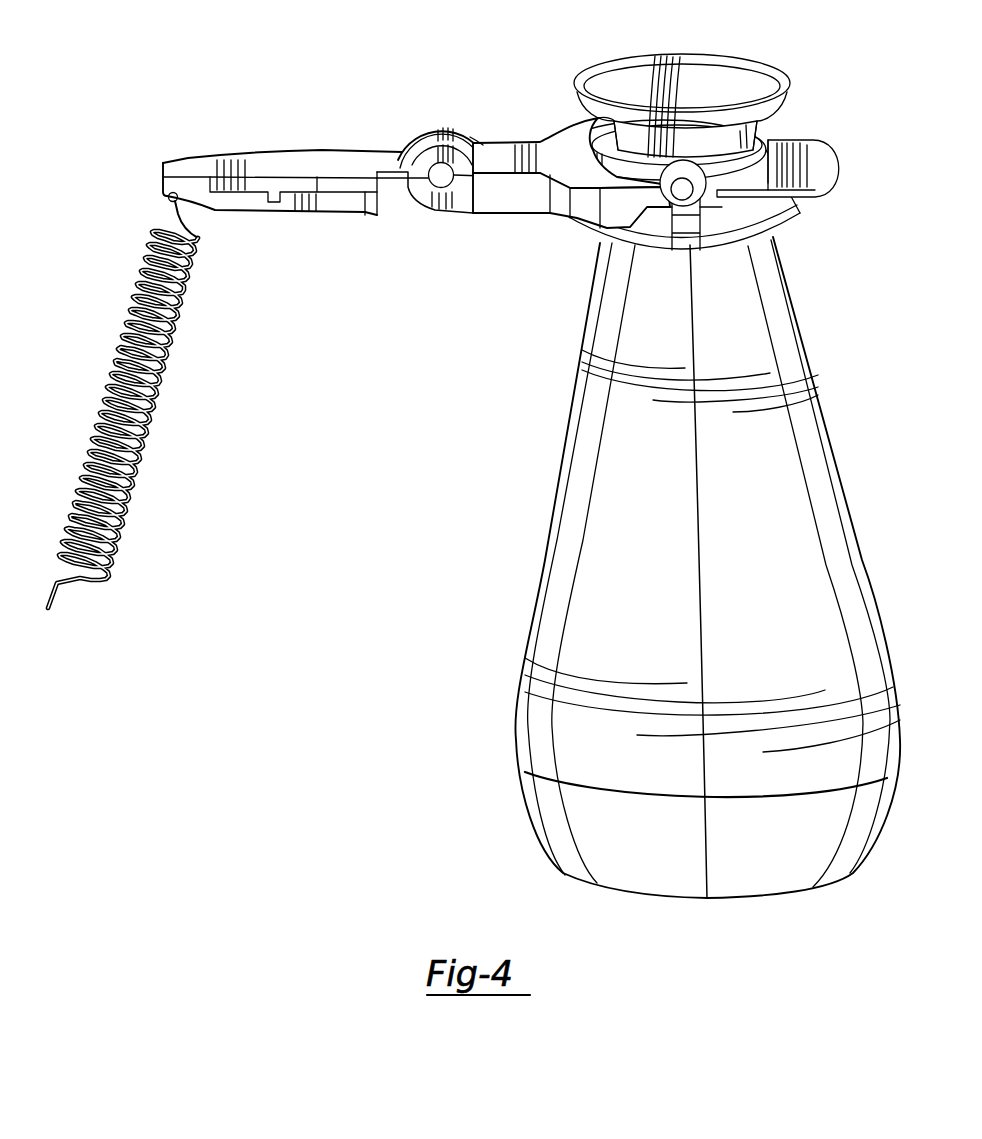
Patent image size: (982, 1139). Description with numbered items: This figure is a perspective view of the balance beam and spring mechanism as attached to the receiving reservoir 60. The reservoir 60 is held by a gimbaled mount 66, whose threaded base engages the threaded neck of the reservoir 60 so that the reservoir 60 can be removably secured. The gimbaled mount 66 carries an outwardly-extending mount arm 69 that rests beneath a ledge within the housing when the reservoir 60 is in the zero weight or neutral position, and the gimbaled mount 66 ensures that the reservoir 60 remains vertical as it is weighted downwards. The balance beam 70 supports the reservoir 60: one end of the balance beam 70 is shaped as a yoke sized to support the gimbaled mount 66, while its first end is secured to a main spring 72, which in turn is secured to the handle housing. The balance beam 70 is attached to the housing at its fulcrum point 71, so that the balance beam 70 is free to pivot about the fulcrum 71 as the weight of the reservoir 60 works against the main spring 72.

The reservoir 60 is at (538, 608).
The gimbaled mount 66 is at (772, 124).
The mount arm 69 is at (790, 86).
The balance beam 70 is at (191, 162).
The fulcrum point 71 is at (448, 178).
The main spring 72 is at (93, 440).